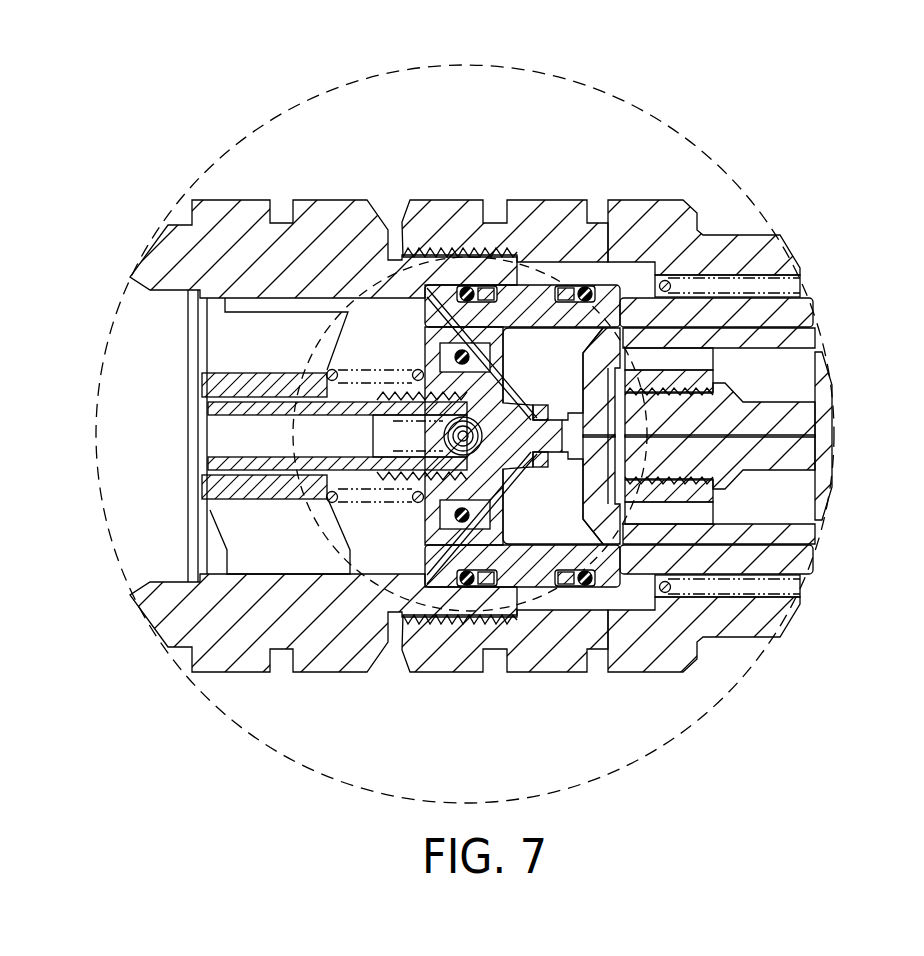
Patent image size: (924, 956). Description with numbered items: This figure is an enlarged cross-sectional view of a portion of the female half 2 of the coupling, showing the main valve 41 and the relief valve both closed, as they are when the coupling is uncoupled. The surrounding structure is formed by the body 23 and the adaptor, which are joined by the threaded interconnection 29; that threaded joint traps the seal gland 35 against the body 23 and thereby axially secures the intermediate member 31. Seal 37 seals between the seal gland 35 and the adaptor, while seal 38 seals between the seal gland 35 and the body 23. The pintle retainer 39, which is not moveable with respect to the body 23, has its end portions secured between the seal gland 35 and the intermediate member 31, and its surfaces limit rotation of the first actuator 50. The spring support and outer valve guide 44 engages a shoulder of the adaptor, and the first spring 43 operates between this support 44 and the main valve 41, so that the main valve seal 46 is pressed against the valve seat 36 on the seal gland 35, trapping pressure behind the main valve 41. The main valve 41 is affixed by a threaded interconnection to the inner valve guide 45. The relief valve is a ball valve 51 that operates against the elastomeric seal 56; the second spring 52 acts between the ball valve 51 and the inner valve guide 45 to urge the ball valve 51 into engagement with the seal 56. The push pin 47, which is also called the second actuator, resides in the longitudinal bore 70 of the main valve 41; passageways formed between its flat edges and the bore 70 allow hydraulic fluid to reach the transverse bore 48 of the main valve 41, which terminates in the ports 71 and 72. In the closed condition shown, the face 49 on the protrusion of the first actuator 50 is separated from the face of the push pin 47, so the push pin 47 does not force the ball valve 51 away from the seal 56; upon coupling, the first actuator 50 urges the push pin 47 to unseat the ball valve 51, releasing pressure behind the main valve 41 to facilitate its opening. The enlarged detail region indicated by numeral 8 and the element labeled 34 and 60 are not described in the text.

The female half 2 is at (556, 148).
The detail area of FIG. 8 is at (513, 262).
The body 23 is at (622, 200).
The threaded interconnection 29 is at (411, 215).
The intermediate member 31 is at (660, 200).
The adapter body 34 is at (728, 290).
The seal gland 35 is at (420, 287).
The valve seat 36 is at (425, 327).
The seal 37 is at (480, 600).
The seal 38 is at (686, 615).
The pintle retainer 39 is at (690, 492).
The main valve 41 is at (372, 565).
The first spring 43 is at (300, 580).
The spring support and outer valve guide 44 is at (205, 400).
The inner valve guide 45 is at (305, 477).
The main valve seal 46 is at (440, 520).
The push pin 47 is at (484, 290).
The transverse bore 48 is at (490, 327).
The face 49 is at (556, 520).
The first actuator 50 is at (773, 530).
The ball valve 51 is at (340, 600).
The second spring 52 is at (445, 437).
The seal 56 is at (440, 421).
The valve seat 60 is at (567, 432).
The longitudinal bore 70 is at (700, 460).
The port 71 is at (520, 403).
The port 72 is at (556, 455).